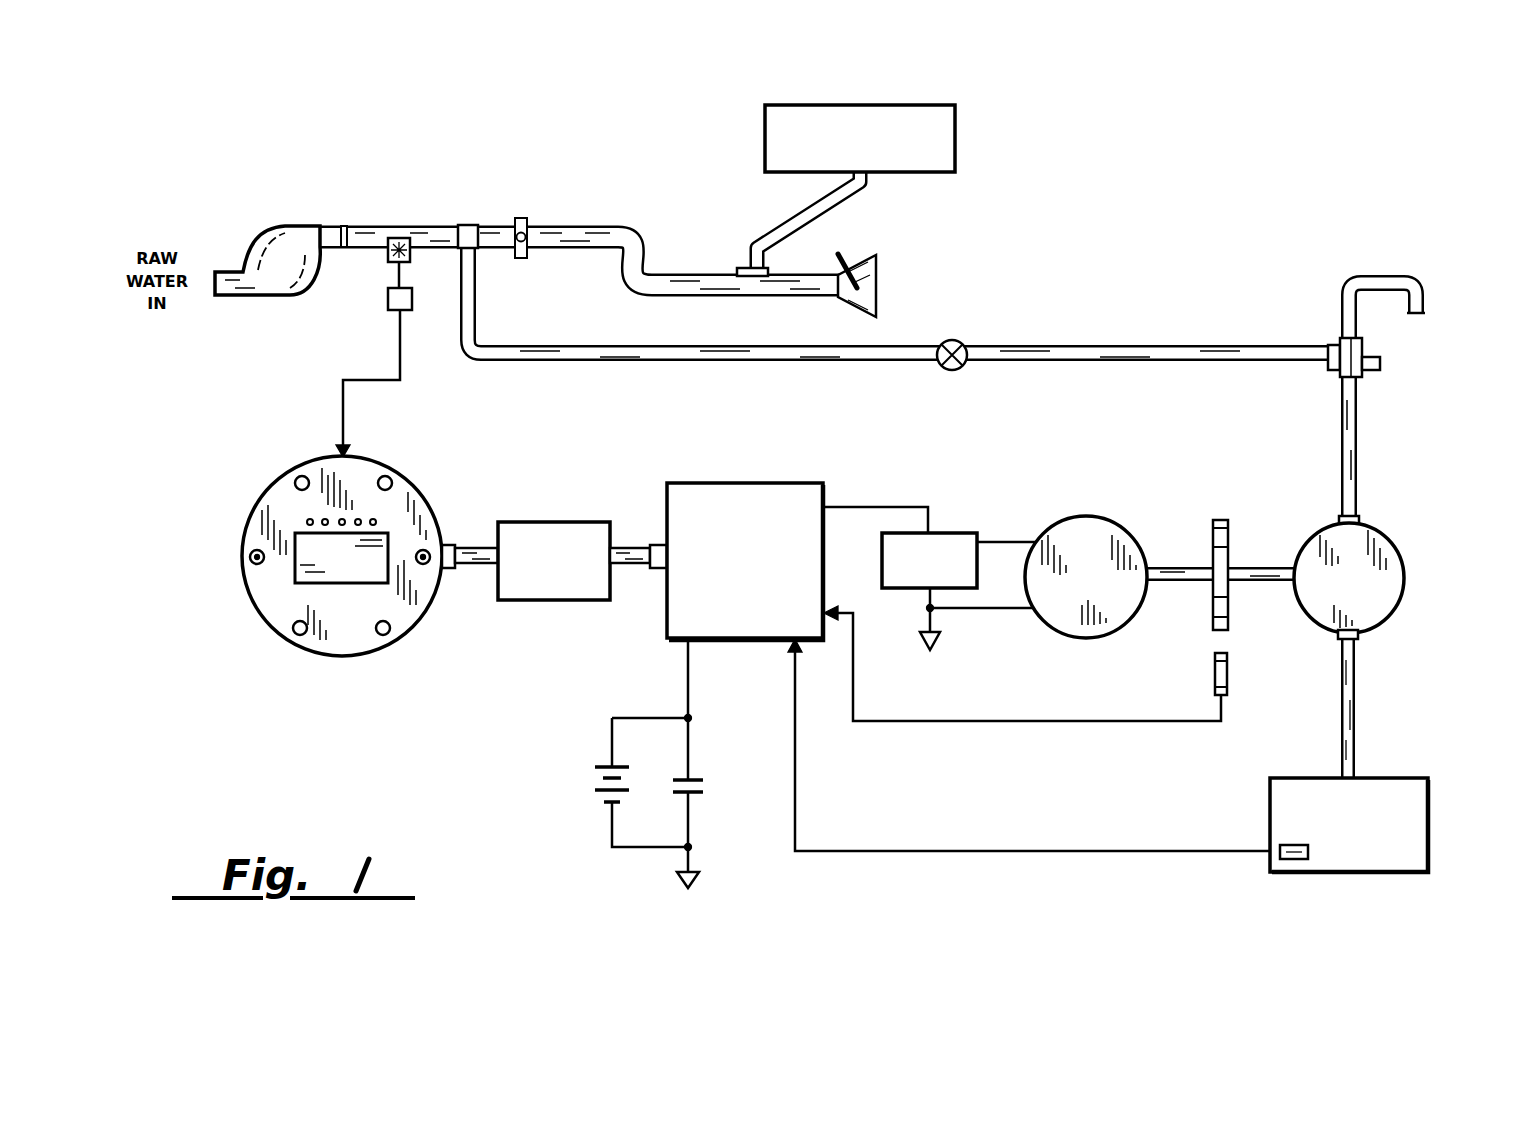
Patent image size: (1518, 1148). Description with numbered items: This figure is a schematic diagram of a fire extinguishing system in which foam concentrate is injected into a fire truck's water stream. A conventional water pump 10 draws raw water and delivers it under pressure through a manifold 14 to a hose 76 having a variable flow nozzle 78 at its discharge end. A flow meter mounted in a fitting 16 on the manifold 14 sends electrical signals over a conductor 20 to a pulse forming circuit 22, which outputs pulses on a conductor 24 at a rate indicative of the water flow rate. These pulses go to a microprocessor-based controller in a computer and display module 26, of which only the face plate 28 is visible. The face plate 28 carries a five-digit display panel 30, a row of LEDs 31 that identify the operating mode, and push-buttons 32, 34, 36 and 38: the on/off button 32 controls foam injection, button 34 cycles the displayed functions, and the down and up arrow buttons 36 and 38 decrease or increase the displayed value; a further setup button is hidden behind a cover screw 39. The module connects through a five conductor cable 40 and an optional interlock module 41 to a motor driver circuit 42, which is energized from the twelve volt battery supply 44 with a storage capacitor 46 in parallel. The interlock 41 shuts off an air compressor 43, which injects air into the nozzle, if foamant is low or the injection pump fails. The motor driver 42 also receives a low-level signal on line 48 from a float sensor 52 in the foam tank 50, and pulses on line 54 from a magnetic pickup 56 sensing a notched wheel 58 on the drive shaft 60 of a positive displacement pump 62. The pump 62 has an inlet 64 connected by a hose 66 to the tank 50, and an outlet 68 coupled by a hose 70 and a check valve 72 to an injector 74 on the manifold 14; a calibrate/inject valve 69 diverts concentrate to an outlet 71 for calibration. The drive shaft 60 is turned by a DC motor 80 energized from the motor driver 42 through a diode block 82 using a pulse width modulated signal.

The water pump 10 is at (272, 230).
The manifold 14 is at (368, 226).
The fitting 16 is at (392, 252).
The conductor 20 is at (405, 272).
The pulse forming circuit 22 is at (412, 302).
The conductor 24 is at (375, 380).
The computer and display module 26 is at (245, 533).
The face plate 28 is at (354, 620).
The display panel 30 is at (354, 572).
The LEDs 31 is at (296, 510).
The on/off push-button 32 is at (298, 478).
The push-button 34 is at (390, 478).
The down arrow push-button 36 is at (292, 636).
The up arrow push-button 38 is at (395, 636).
The cover screw 39 is at (252, 563).
The five conductor cable 40 is at (465, 545).
The interlock module 41 is at (541, 522).
The motor driver circuit 42 is at (740, 483).
The air compressor 43 is at (957, 140).
The 12 volt battery supply 44 is at (598, 800).
The storage capacitor 46 is at (704, 785).
The line 48 is at (965, 851).
The foam tank 50 is at (1430, 825).
The float sensor 52 is at (1291, 862).
The line 54 is at (1093, 721).
The magnetic pickup 56 is at (1228, 672).
The notched wheel 58 is at (1228, 532).
The drive shaft 60 is at (1180, 582).
The positive displacement pump 62 is at (1402, 562).
The inlet 64 is at (1358, 633).
The hose 66 is at (1355, 720).
The outlet 68 is at (1365, 518).
The calibrate/inject valve 69 is at (1335, 372).
The hose 70 is at (1117, 348).
The outlet 71 is at (1420, 314).
The check valve 72 is at (962, 370).
The injector 74 is at (478, 250).
The hose 76 is at (622, 228).
The variable flow nozzle 78 is at (877, 286).
The DC motor 80 is at (1093, 516).
The diode block 82 is at (952, 533).